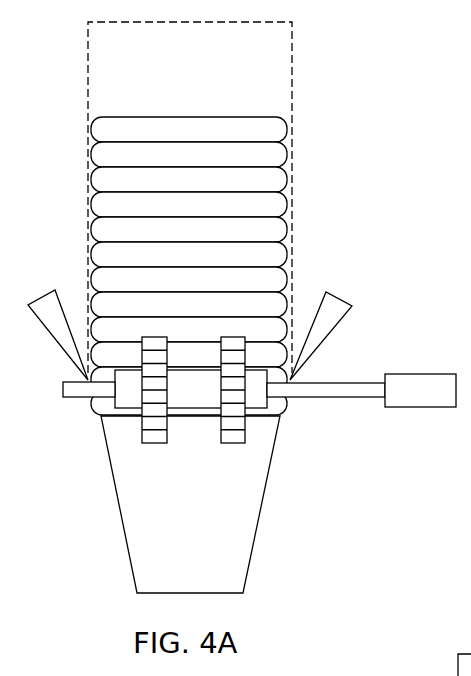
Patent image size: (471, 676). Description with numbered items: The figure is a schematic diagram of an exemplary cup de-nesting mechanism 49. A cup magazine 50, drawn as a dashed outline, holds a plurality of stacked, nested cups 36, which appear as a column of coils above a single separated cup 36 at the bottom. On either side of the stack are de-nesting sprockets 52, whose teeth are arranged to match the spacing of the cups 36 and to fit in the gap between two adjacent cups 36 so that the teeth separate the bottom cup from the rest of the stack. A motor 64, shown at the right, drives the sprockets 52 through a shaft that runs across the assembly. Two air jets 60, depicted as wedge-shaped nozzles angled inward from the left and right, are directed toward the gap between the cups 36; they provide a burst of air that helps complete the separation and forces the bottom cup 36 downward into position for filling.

The cup 36 is at (182, 545).
The cup de-nesting mechanism 49 is at (357, 152).
The cup magazine 50 is at (295, 64).
The de-nesting sprocket 52 is at (159, 463).
The air jet 60 is at (43, 296).
The motor 64 is at (411, 401).